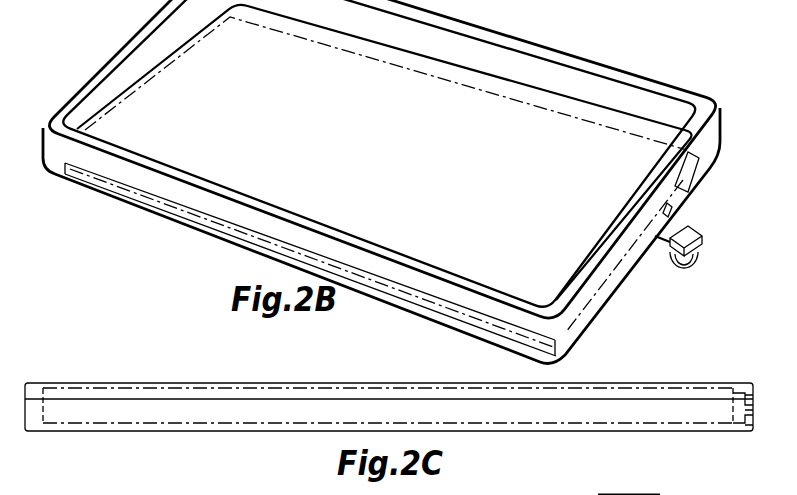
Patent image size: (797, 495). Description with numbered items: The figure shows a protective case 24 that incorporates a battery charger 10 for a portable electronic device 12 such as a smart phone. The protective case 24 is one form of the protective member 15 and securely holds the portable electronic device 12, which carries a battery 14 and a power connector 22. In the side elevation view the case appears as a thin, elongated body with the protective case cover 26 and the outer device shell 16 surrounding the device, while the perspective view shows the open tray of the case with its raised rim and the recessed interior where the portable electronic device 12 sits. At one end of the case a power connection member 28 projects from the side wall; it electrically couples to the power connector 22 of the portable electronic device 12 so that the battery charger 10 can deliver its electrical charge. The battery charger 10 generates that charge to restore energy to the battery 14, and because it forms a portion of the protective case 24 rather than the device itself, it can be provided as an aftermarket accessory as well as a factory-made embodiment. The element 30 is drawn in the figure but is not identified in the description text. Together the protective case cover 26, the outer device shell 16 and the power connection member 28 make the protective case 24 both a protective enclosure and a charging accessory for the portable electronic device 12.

In FIG. 2B, the battery charger 10 is at (163, 203).
In FIG. 2C, the battery charger 10 is at (123, 423).
In FIG. 2B, the portable electronic device 12 is at (379, 153).
In FIG. 2C, the portable electronic device 12 is at (128, 381).
In FIG. 2C, the battery 14 is at (35, 432).
In FIG. 2B, the protective member 15 is at (86, 184).
In FIG. 2C, the outer device shell 16 is at (183, 432).
In FIG. 2C, the power connector 22 is at (746, 433).
In FIG. 2C, the protective case 24 is at (40, 381).
In FIG. 2B, the protective case cover 26 is at (395, 300).
In FIG. 2B, the power connection member 28 is at (702, 241).
In FIG. 2C, the power connection member 28 is at (752, 396).
In FIG. 2C, the stand 30 is at (630, 493).